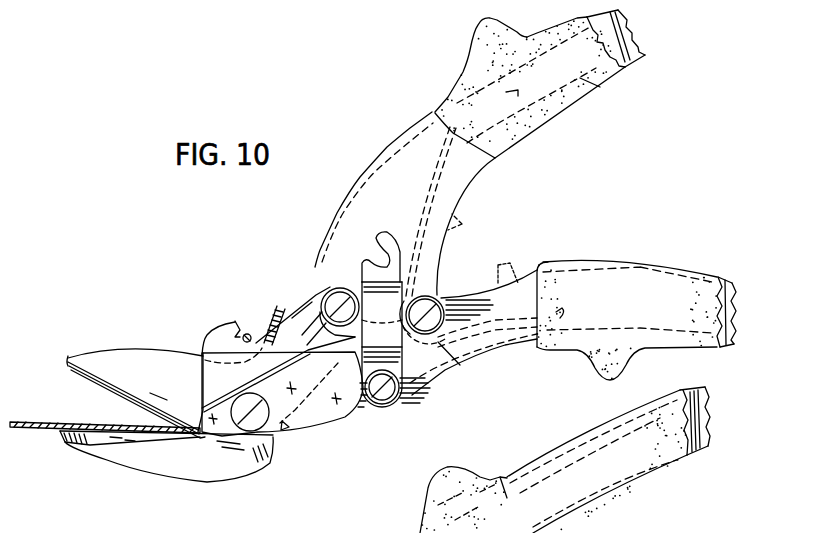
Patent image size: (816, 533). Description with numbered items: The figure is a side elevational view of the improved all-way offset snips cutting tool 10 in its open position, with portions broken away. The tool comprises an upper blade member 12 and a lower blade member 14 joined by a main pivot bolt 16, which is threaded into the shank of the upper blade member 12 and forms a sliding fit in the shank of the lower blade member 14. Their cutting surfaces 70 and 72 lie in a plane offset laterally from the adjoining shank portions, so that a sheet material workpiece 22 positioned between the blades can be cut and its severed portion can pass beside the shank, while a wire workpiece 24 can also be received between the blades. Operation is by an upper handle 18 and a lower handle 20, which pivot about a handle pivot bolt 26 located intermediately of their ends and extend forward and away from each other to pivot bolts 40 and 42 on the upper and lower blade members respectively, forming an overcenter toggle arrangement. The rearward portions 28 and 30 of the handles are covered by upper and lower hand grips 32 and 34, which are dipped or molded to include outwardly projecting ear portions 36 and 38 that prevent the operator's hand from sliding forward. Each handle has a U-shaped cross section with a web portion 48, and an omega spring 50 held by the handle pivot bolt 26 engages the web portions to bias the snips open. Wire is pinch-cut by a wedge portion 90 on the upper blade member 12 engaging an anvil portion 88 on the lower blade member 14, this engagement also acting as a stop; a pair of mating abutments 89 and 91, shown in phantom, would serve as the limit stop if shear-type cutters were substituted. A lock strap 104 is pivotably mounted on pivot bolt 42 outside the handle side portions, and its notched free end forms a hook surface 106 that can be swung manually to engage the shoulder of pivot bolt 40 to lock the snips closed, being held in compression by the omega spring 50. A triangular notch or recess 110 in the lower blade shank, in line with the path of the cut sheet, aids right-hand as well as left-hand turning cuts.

The all-way offset snips cutting tool 10 is at (380, 117).
The upper blade member 12 is at (199, 359).
The lower blade member 14 is at (213, 442).
The main pivot bolt 16 is at (265, 415).
The upper handle 18 is at (512, 271).
The lower handle 20 is at (575, 304).
The sheet material workpiece 22 is at (40, 428).
The wire workpiece 24 is at (247, 330).
The handle pivot bolt 26 is at (436, 302).
The rearward portion of upper handle 28 is at (645, 56).
The rearward portion of lower handle 30 is at (728, 280).
The upper hand grip 32 is at (585, 80).
The lower hand grip 34 is at (590, 272).
The ear portion of upper hand grip 36 is at (487, 42).
The ear portion of lower hand grip 38 is at (585, 351).
The pivot bolt 40 is at (328, 292).
The pivot bolt 42 is at (393, 403).
The web portion 48 is at (363, 182).
The omega spring 50 is at (460, 365).
The cutting surface of upper blade 70 is at (88, 385).
The cutting surface of lower blade 72 is at (77, 424).
The anvil portion 88 is at (236, 330).
The abutment 89 is at (462, 225).
The wedge portion 90 is at (266, 330).
The abutment 91 is at (500, 265).
The lock strap 104 is at (352, 300).
The hook surface 106 is at (377, 260).
The triangular notch or recess 110 is at (275, 438).